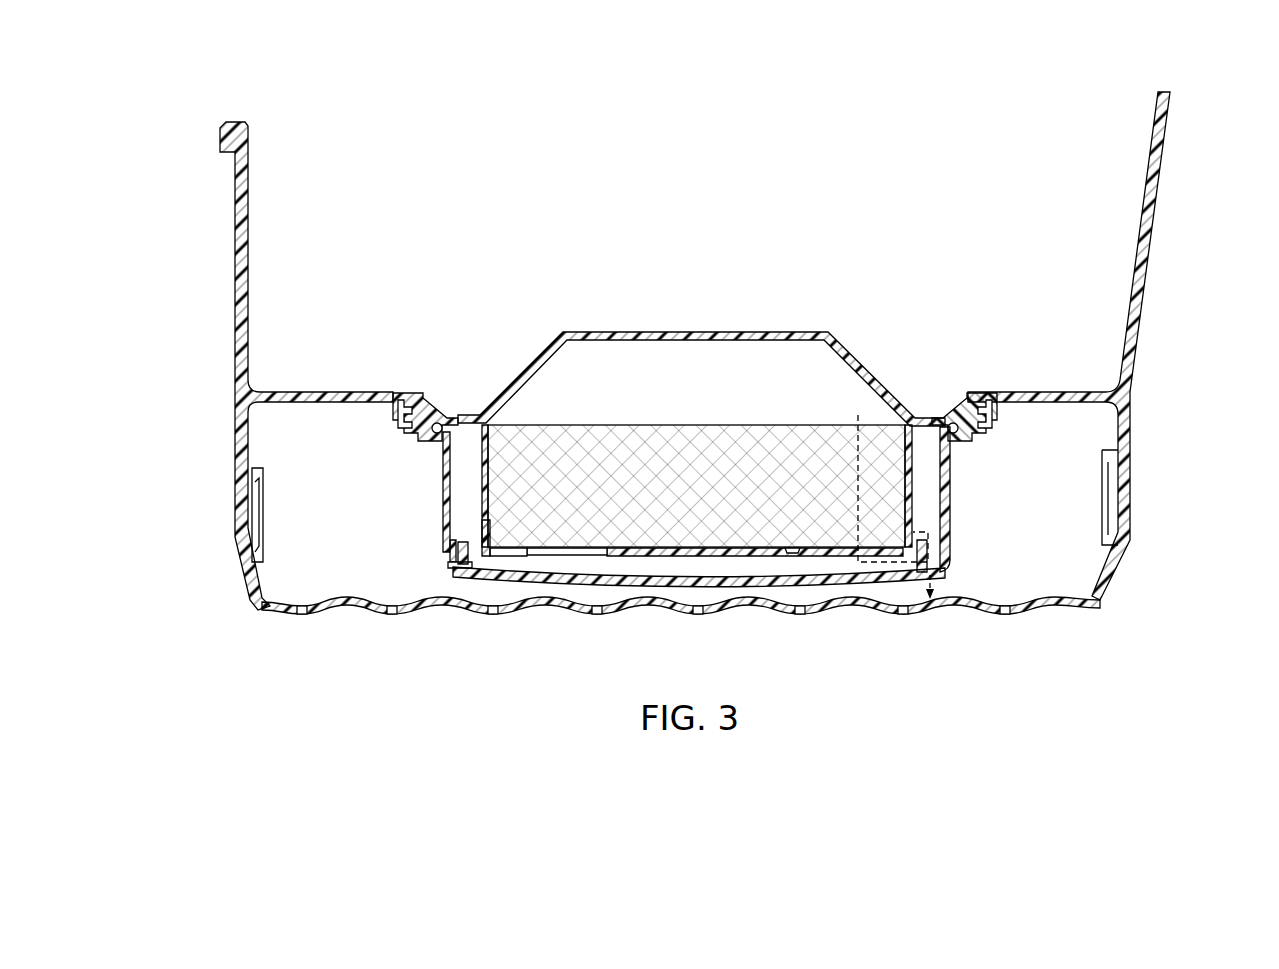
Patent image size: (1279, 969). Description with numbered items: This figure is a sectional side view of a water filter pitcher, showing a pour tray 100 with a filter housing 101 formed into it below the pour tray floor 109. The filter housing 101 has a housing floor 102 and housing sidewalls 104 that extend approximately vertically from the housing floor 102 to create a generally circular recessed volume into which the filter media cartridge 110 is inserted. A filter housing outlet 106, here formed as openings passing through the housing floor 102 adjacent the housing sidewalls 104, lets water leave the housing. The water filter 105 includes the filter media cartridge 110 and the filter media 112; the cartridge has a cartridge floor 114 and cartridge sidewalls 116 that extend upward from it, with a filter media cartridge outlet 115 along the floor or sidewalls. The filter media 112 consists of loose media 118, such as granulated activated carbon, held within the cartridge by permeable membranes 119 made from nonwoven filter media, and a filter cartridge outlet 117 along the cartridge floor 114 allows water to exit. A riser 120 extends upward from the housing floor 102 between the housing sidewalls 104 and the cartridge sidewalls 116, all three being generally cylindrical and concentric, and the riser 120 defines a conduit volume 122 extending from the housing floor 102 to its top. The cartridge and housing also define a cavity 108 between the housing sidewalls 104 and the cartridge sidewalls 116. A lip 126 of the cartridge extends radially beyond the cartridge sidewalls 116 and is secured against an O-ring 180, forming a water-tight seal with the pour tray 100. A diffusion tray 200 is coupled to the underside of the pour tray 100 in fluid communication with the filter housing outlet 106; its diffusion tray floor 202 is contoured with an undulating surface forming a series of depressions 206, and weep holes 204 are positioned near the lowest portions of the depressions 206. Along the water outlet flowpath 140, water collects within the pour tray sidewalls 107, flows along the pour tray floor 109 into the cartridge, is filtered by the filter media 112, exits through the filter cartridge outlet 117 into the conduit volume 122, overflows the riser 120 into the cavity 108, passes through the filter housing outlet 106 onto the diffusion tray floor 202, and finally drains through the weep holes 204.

The pour tray 100 is at (1168, 266).
The filter housing 101 is at (704, 443).
The housing floor 102 is at (705, 590).
The housing sidewalls 104 is at (950, 525).
The water filter 105 is at (713, 331).
The filter housing outlet 106 is at (450, 553).
The pour tray sidewalls 107 is at (250, 210).
The cavity 108 is at (932, 478).
The pour tray floor 109 is at (308, 392).
The filter media cartridge 110 is at (872, 360).
The filter media 112 is at (705, 467).
The cartridge floor 114 is at (520, 556).
The filter media cartridge outlet 115 is at (485, 508).
The cartridge sidewalls 116 is at (482, 452).
The filter cartridge outlet 117 is at (803, 552).
The loose media 118 is at (666, 437).
The permeable membranes 119 is at (731, 425).
The riser 120 is at (458, 560).
The conduit volume 122 is at (485, 528).
The lip 126 is at (436, 393).
The water outlet flowpath 140 is at (940, 588).
The O-ring 180 is at (415, 370).
The diffusion tray 200 is at (712, 397).
The diffusion tray floor 202 is at (681, 649).
The weep holes 204 is at (905, 616).
The depressions 206 is at (612, 616).